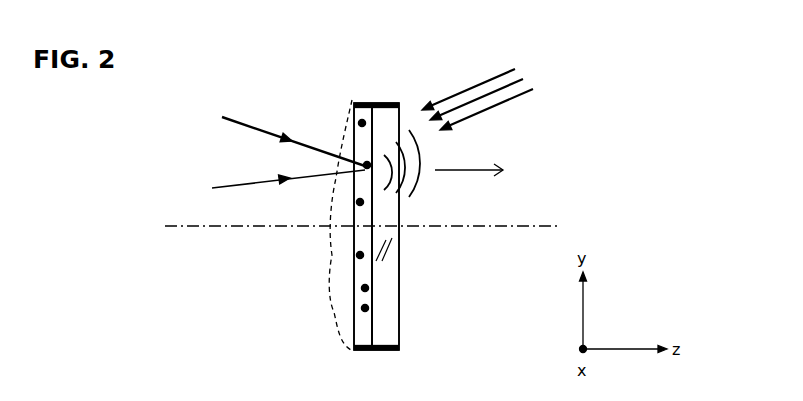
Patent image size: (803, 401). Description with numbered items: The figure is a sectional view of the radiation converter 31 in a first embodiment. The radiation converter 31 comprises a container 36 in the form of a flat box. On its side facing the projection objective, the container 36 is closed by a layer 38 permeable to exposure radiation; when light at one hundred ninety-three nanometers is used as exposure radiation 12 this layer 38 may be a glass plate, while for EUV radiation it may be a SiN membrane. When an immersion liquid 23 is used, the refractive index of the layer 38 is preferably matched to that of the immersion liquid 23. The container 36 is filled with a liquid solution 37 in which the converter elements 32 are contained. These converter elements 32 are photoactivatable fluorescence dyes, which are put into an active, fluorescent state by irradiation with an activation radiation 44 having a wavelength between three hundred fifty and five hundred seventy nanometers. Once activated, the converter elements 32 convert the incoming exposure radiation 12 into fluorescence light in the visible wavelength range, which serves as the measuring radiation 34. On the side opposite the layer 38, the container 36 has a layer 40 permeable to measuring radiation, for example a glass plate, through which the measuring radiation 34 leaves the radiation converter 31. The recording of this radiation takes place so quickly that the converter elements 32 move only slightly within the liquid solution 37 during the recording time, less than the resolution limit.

The exposure radiation 12 is at (250, 128).
The immersion liquid 23 is at (345, 112).
The radiation converter 31 is at (399, 332).
The converter elements 32 is at (358, 122).
The measuring radiation 34 is at (424, 146).
The container 36 is at (356, 104).
The liquid solution 37 is at (363, 329).
The layer permeable to exposure radiation 38 is at (353, 240).
The layer permeable to measuring radiation 40 is at (399, 310).
The activation radiation 44 is at (492, 108).